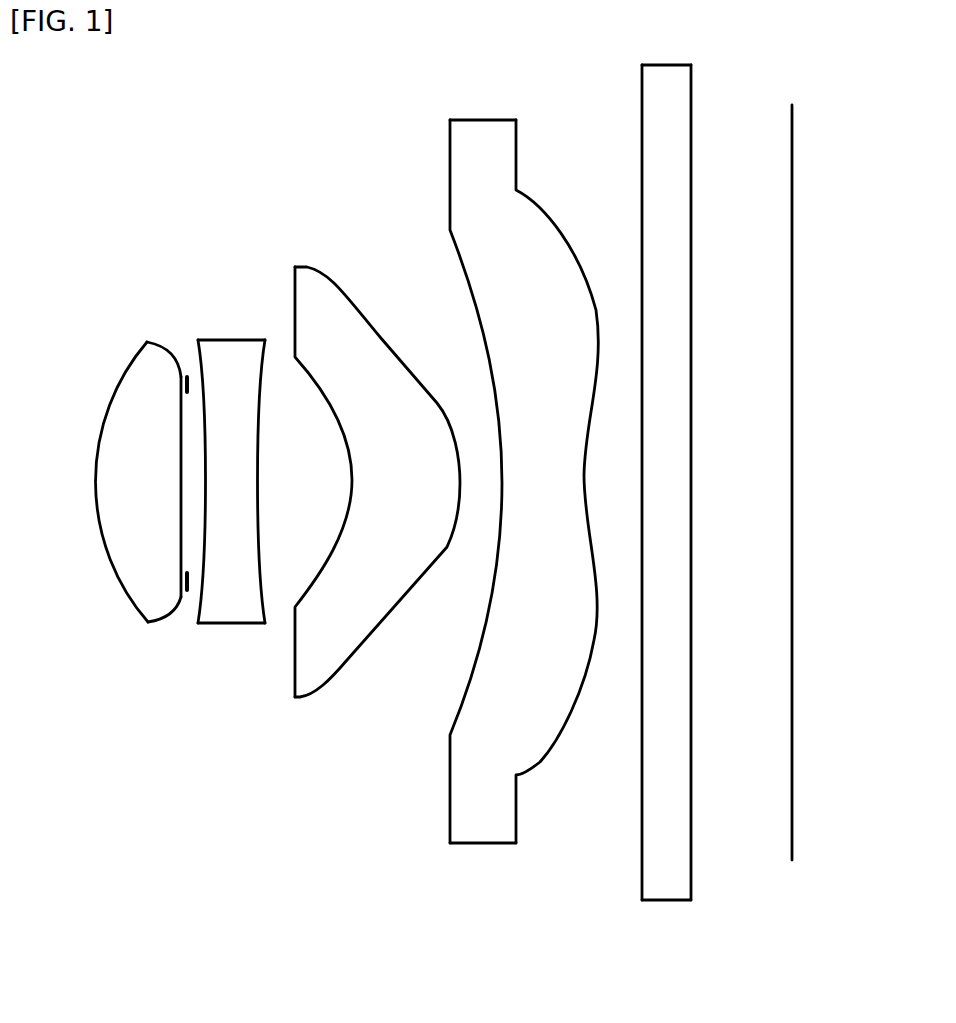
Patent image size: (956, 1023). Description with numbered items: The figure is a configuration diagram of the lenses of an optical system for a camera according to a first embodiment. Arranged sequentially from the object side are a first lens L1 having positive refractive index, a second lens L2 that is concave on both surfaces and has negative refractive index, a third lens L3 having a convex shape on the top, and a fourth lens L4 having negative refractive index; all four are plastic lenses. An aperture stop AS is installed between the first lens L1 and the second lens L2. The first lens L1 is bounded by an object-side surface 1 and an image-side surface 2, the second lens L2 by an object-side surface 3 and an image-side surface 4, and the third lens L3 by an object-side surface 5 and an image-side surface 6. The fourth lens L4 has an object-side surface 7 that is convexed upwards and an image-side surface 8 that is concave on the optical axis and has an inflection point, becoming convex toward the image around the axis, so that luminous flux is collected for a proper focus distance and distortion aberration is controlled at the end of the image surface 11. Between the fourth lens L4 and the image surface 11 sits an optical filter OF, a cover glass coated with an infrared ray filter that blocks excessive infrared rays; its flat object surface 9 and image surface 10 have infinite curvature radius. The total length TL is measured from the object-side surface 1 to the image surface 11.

The object-side surface of first lens 1 is at (110, 403).
The image-side surface of first lens 2 is at (182, 387).
The object-side surface of second lens 3 is at (195, 352).
The image-side surface of second lens 4 is at (270, 355).
The object-side surface of third lens 5 is at (295, 288).
The image-side surface of third lens 6 is at (378, 335).
The object-side surface of fourth lens 7 is at (450, 163).
The image-side surface of fourth lens 8 is at (546, 212).
The object surface of optical filter 9 is at (641, 106).
The image surface of optical filter 10 is at (692, 106).
The image surface 11 is at (793, 180).
The first lens L1 is at (96, 481).
The second lens L2 is at (195, 487).
The third lens L3 is at (330, 492).
The fourth lens L4 is at (496, 524).
The aperture stop AS is at (190, 590).
The optical filter OF is at (665, 527).